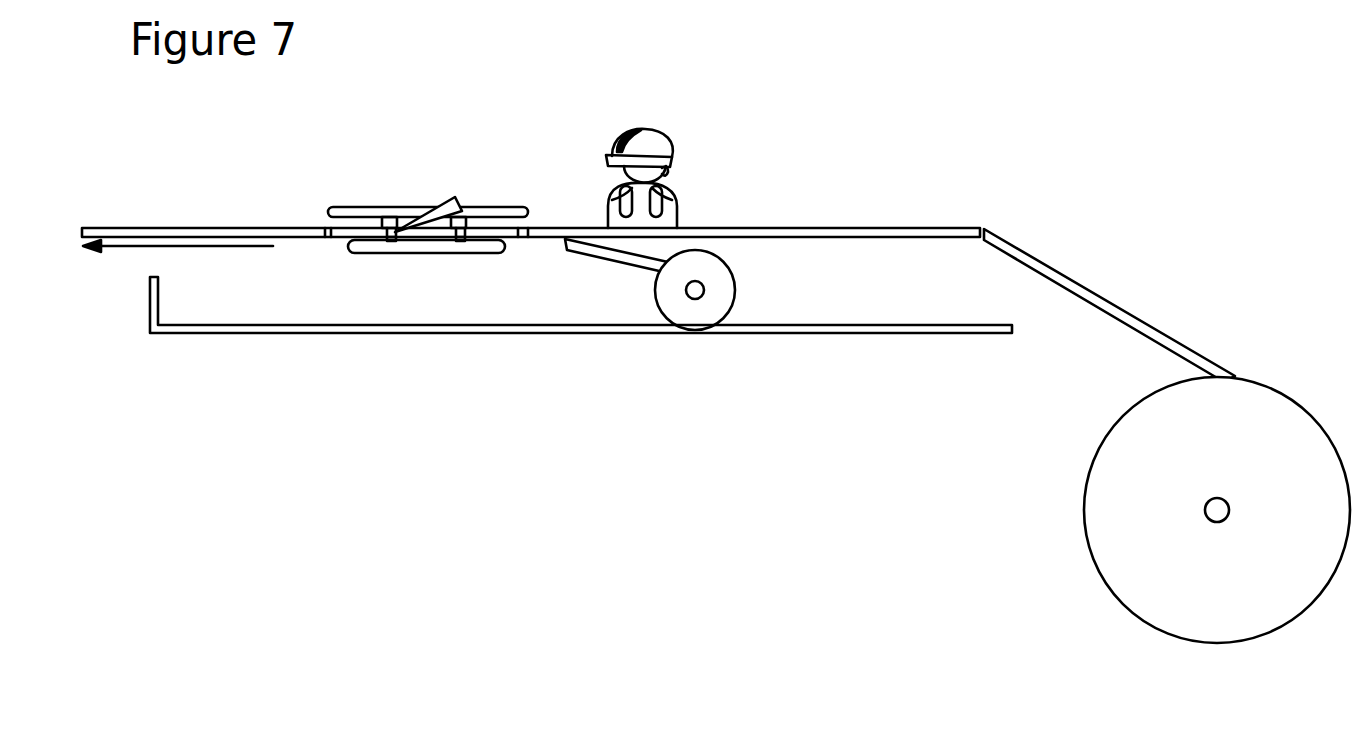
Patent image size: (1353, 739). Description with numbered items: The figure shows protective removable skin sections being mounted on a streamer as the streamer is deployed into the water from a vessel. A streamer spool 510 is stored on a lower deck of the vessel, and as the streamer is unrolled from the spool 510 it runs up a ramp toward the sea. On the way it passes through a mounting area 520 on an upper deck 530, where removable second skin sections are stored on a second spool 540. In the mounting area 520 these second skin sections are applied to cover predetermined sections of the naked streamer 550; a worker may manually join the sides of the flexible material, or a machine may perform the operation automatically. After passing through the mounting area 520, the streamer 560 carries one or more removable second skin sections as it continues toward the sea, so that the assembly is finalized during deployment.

The streamer spool 510 is at (1068, 480).
The mounting area 520 is at (318, 216).
The upper deck 530 is at (256, 325).
The second spool 540 is at (645, 311).
The naked streamer 550 is at (927, 220).
The streamer 560 is at (111, 229).